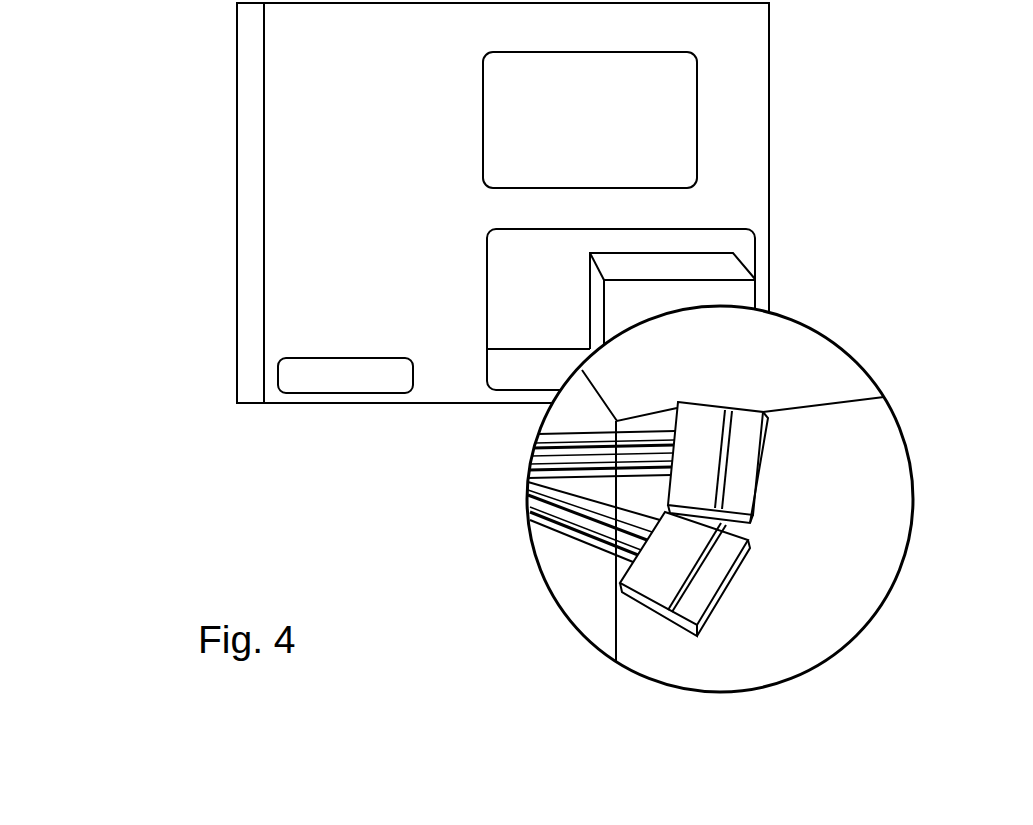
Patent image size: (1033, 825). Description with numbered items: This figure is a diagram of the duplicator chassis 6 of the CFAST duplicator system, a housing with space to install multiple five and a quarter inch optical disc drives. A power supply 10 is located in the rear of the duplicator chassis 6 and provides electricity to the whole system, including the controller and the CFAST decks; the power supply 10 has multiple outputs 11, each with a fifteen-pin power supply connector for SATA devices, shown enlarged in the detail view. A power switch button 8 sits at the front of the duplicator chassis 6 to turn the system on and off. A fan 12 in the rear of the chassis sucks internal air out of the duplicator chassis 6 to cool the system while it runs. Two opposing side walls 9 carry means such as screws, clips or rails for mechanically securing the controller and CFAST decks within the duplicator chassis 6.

The duplicator chassis 6 is at (140, 126).
The power switch button 8 is at (230, 383).
The opposing side walls 9 is at (340, 311).
The power supply 10 is at (746, 276).
The outputs 11 is at (497, 405).
The fan 12 is at (791, 53).